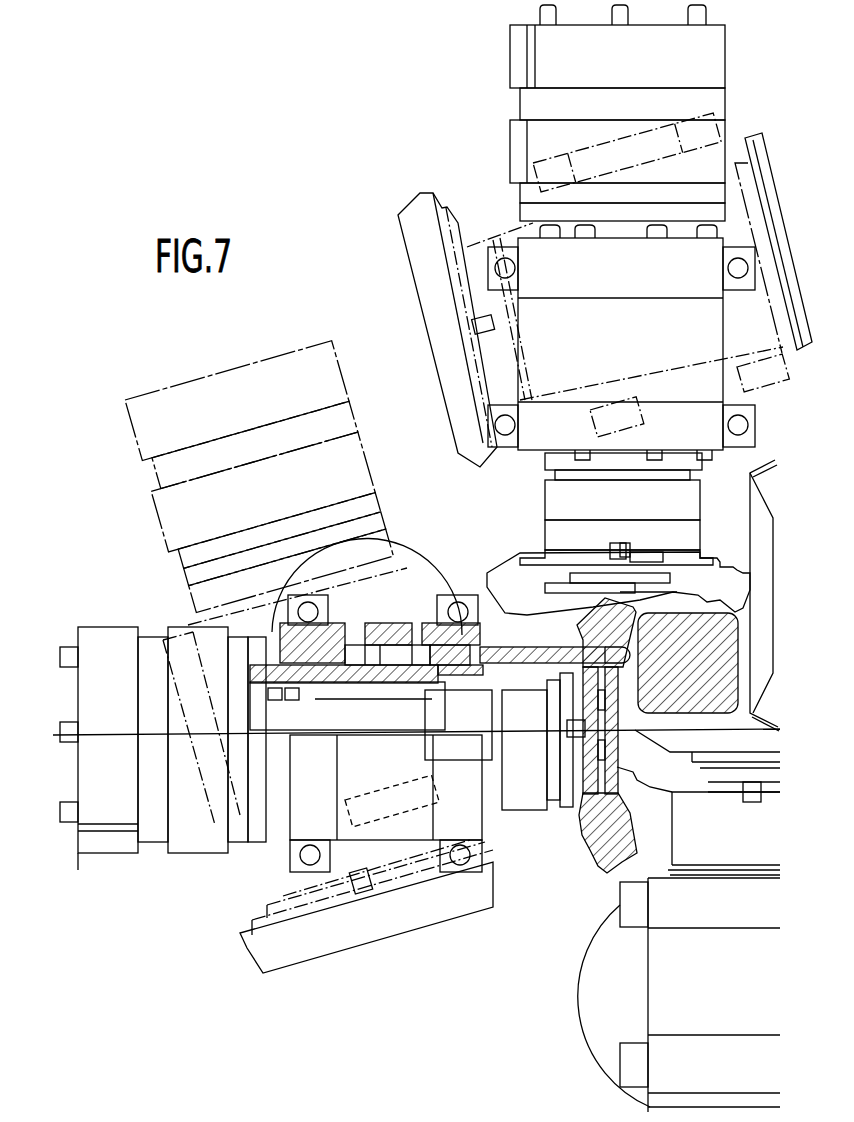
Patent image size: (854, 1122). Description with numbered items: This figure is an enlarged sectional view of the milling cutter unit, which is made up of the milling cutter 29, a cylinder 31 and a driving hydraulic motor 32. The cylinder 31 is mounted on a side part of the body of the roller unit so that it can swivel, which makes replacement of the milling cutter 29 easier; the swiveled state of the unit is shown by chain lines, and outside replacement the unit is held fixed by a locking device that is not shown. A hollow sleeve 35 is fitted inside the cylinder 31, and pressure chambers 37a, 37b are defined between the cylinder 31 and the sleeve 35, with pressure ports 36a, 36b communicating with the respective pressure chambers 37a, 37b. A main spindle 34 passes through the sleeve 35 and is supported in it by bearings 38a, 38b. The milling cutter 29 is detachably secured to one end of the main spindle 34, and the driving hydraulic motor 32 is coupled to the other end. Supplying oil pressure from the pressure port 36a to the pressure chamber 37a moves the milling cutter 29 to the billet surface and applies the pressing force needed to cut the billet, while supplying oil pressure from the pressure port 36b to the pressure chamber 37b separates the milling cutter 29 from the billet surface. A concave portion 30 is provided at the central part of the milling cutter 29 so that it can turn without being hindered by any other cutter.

The milling cutter 29 is at (510, 583).
The concave portion 30 is at (697, 596).
The cylinder 31 is at (275, 636).
The driving hydraulic motor 32 is at (88, 768).
The main spindle 34 is at (330, 710).
The hollow sleeve 35 is at (490, 665).
The pressure port 36a is at (350, 628).
The pressure port 36b is at (432, 622).
The pressure chamber 37a is at (362, 625).
The pressure chamber 37b is at (420, 625).
The bearing 38a is at (275, 703).
The bearing 38b is at (525, 700).